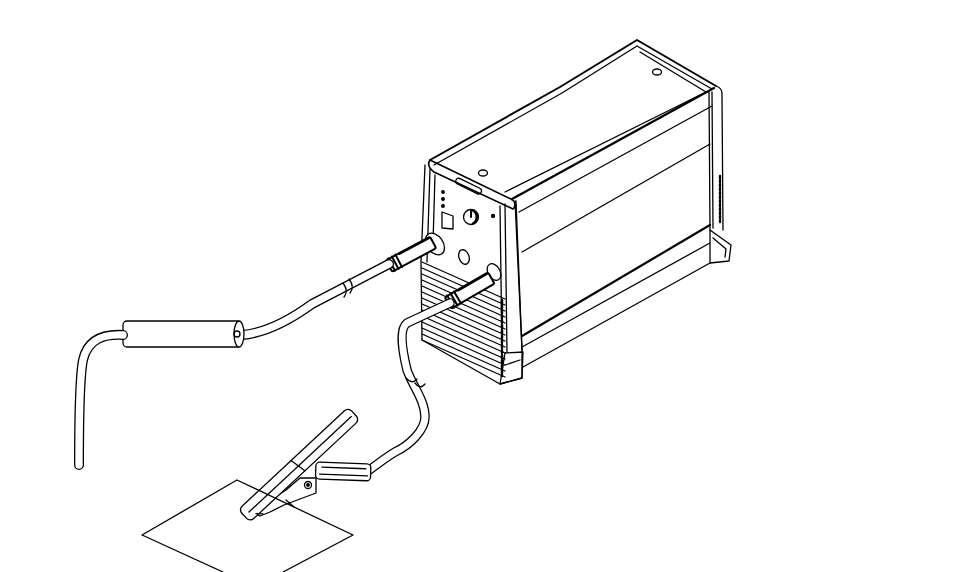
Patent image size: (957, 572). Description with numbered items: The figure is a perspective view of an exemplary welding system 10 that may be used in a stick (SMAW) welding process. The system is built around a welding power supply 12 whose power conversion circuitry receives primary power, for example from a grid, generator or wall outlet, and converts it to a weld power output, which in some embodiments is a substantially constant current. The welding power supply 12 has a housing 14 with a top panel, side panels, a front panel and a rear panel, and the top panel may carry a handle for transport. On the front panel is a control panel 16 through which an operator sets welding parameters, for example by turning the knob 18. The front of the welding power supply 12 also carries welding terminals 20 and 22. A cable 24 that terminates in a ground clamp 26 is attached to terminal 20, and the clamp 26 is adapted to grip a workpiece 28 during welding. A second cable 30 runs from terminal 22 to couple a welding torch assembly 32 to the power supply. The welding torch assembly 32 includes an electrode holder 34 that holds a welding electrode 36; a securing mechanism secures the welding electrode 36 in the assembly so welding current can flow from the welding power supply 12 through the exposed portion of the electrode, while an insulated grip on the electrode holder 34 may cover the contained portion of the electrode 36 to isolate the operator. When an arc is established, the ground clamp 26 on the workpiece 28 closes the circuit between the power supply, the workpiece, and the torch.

The welding system 10 is at (316, 127).
The welding power supply 12 is at (548, 64).
The housing 14 is at (541, 123).
The control panel 16 is at (436, 159).
The knob 18 is at (462, 217).
The welding terminal 20 is at (497, 275).
The welding terminal 22 is at (432, 234).
The cable 24 is at (424, 421).
The ground clamp 26 is at (331, 426).
The workpiece 28 is at (195, 513).
The second cable 30 is at (311, 306).
The welding torch assembly 32 is at (93, 285).
The electrode holder 34 is at (184, 320).
The welding electrode 36 is at (79, 360).